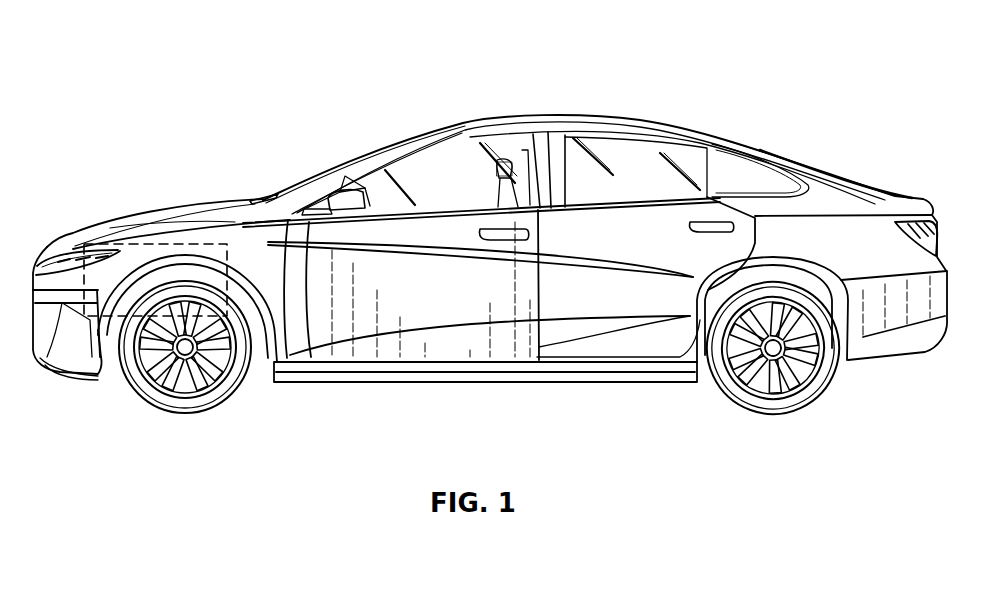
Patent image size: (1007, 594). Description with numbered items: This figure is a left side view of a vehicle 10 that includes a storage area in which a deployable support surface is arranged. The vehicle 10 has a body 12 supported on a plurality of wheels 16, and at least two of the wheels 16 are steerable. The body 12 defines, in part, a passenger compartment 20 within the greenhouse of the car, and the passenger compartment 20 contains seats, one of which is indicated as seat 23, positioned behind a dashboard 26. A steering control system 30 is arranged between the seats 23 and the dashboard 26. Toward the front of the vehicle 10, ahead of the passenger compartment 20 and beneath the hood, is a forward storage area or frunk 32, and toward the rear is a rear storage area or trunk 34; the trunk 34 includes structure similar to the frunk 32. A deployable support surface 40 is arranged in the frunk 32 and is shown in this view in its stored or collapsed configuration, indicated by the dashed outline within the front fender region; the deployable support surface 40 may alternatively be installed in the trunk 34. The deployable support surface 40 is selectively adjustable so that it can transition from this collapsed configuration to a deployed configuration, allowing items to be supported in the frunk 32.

The vehicle 10 is at (303, 161).
The body 12 is at (556, 117).
The wheels 16 is at (208, 402).
The passenger compartment 20 is at (463, 168).
The seat 23 is at (522, 203).
The dashboard 26 is at (366, 184).
The steering control system 30 is at (421, 136).
The frunk 32 is at (191, 202).
The trunk 34 is at (842, 196).
The deployable support surface 40 is at (105, 224).